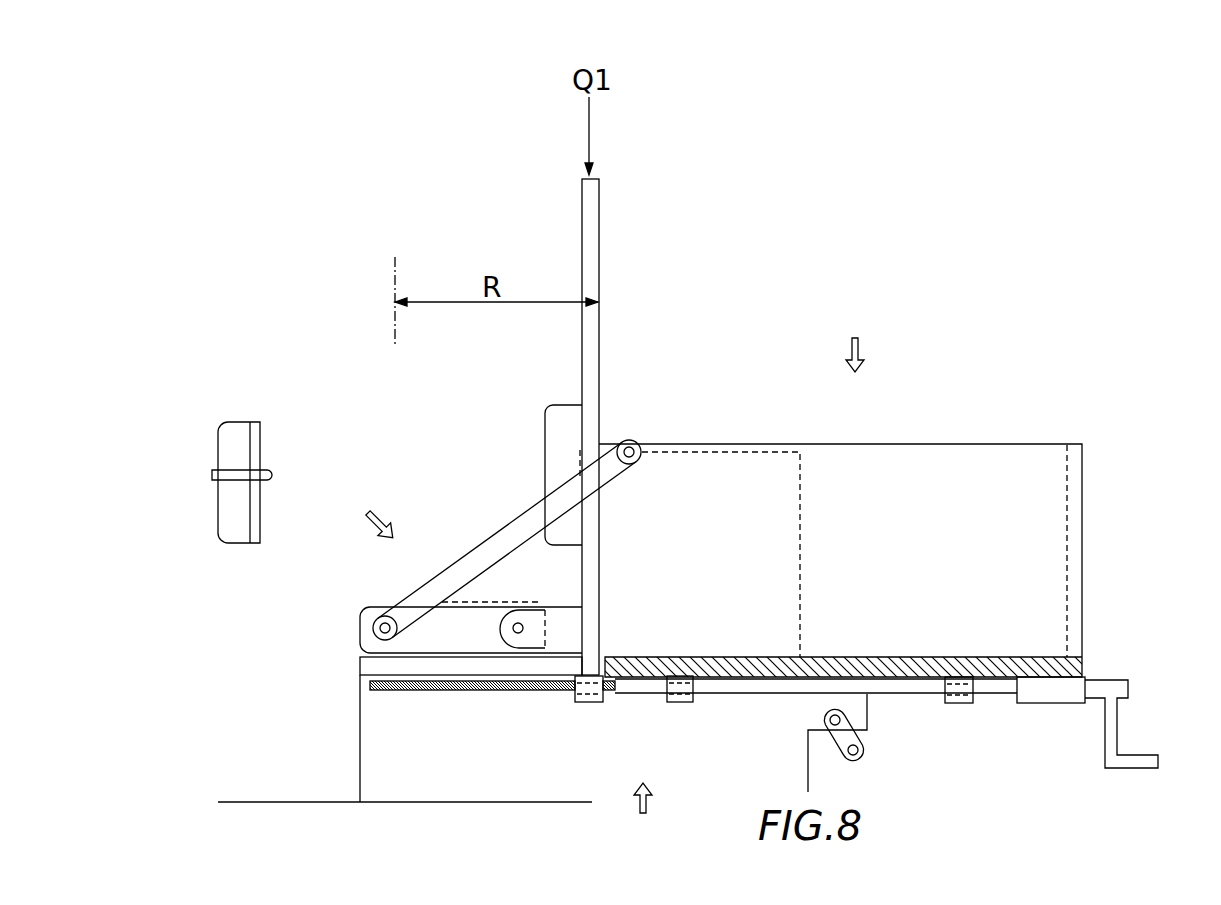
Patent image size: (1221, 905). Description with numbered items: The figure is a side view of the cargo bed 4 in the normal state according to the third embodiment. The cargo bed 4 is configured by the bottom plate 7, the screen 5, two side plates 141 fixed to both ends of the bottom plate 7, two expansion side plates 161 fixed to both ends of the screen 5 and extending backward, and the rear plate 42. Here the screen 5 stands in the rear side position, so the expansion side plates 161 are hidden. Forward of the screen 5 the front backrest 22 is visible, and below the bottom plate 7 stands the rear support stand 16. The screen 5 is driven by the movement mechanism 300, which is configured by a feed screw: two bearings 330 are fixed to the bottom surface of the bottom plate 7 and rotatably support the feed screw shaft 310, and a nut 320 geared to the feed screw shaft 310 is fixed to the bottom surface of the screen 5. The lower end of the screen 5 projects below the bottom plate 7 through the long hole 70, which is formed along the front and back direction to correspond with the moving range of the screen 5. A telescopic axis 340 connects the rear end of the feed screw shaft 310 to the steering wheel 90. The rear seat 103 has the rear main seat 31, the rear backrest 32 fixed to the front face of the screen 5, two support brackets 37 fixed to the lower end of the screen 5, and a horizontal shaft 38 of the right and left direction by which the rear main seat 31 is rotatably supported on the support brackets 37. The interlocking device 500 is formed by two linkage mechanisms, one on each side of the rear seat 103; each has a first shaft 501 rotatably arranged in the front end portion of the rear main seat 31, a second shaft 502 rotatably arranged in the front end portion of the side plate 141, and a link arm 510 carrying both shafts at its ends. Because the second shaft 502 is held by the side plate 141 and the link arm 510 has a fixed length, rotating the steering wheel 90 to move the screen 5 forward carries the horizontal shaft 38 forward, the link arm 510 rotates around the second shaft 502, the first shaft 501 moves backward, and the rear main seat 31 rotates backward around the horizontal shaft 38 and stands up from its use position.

The cargo bed 4 is at (857, 337).
The screen 5 is at (600, 253).
The bottom plate 7 is at (775, 668).
The rear support stand 16 is at (360, 730).
The front backrest 22 is at (240, 427).
The rear main seat 31 is at (382, 607).
The rear backrest 32 is at (545, 425).
The support bracket 37 is at (563, 617).
The horizontal shaft 38 is at (517, 622).
The rear plate 42 is at (1066, 483).
The long hole 70 is at (367, 665).
The steering wheel 90 is at (1112, 728).
The rear seat 103 is at (367, 511).
The side plate 141 is at (923, 447).
The expansion side plate 161 is at (740, 445).
The movement mechanism 300 is at (643, 817).
The feed screw shaft 310 is at (473, 692).
The nut 320 is at (588, 702).
The bearing 330 is at (682, 703).
The telescopic axis 340 is at (1045, 703).
The interlocking device 500 is at (471, 499).
The first shaft 501 is at (378, 621).
The second shaft 502 is at (630, 440).
The link arm 510 is at (507, 532).